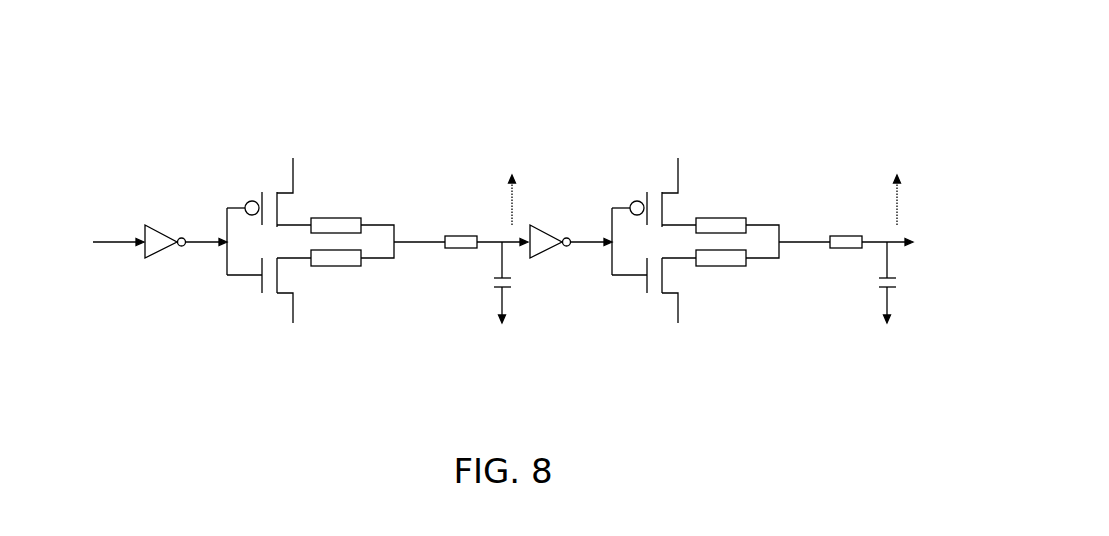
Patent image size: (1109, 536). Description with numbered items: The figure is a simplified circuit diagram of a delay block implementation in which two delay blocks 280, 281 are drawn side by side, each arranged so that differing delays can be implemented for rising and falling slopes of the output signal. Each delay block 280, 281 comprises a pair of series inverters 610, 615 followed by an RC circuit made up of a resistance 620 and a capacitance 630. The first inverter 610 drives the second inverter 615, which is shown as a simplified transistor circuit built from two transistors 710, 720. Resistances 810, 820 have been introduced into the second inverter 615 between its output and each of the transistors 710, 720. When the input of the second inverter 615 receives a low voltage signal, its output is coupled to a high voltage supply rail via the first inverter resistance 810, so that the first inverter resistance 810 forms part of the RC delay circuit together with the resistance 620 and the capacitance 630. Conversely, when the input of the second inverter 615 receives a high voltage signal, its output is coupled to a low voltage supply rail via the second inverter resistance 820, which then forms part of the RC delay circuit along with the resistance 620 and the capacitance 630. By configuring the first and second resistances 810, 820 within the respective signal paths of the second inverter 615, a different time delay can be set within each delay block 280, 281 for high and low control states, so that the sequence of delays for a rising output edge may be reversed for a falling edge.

The delay block 280 is at (328, 82).
The delay block 281 is at (713, 76).
The inverter 610 is at (146, 262).
The second inverter 615 is at (462, 267).
The resistance 620 is at (462, 240).
The capacitance 630 is at (512, 292).
The transistor 710 is at (256, 167).
The transistor 720 is at (257, 321).
The first inverter resistance 810 is at (328, 261).
The second inverter resistance 820 is at (328, 223).